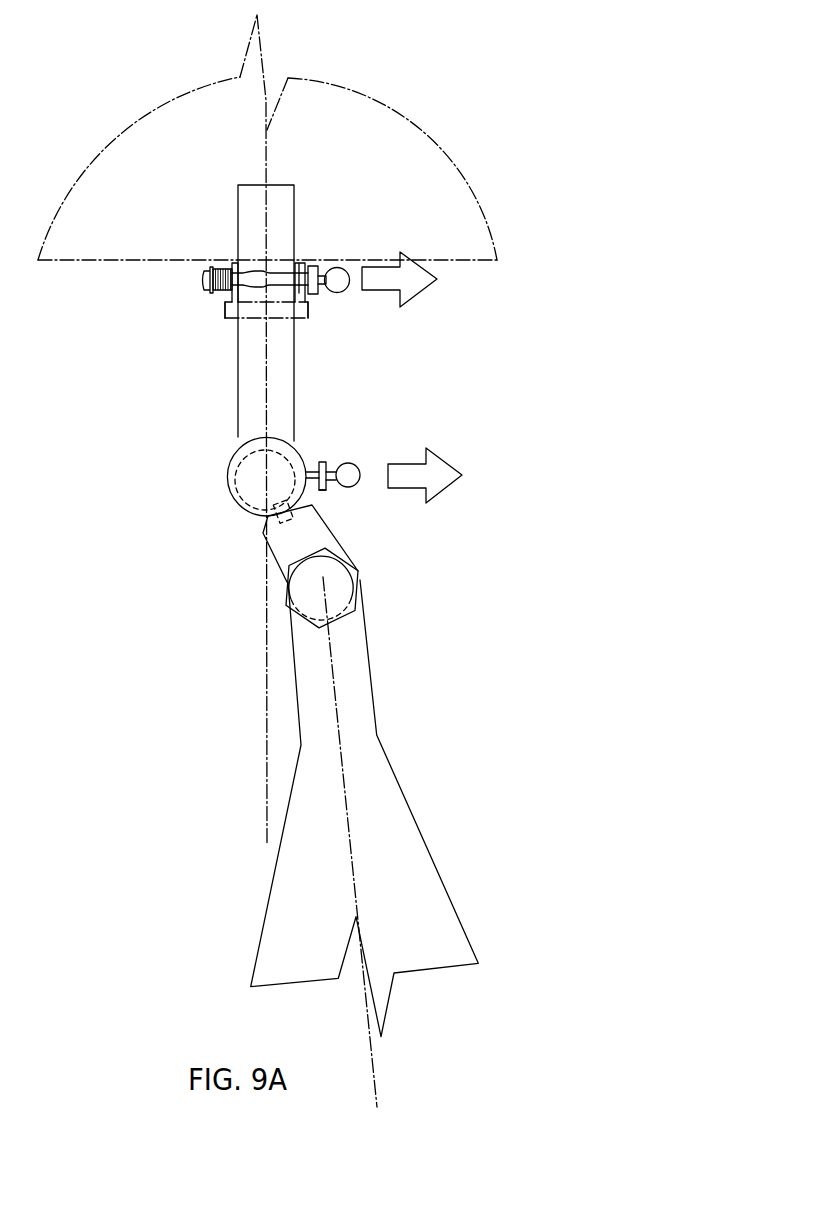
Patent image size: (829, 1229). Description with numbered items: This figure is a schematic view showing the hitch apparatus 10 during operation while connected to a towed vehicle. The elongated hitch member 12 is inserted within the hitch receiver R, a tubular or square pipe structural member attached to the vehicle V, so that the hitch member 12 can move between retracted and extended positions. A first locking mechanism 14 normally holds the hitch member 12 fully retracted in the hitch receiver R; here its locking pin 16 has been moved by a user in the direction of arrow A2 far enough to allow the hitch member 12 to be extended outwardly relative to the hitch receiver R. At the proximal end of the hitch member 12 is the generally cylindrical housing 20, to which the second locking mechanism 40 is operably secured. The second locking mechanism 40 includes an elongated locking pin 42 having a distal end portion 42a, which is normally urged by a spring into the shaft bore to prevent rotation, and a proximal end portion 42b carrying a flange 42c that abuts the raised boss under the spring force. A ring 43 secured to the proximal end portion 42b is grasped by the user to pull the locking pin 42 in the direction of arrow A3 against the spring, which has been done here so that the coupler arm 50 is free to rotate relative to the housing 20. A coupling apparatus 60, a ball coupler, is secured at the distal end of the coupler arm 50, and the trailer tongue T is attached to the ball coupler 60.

The hitch apparatus 10 is at (146, 380).
The hitch member 12 is at (238, 372).
The first locking mechanism 14 is at (291, 243).
The locking pin 16 is at (305, 266).
The hitch receiver R is at (309, 313).
The housing 20 is at (227, 477).
The second locking mechanism 40 is at (344, 457).
The locking pin 42 is at (344, 457).
The distal end portion 42a is at (306, 473).
The proximal end portion 42b is at (330, 475).
The flange 42c is at (322, 489).
The ring 43 is at (357, 468).
The coupler arm 50 is at (282, 548).
The coupling apparatus 60 is at (303, 588).
The trailer tongue T is at (363, 692).
The vehicle V is at (405, 132).
The arrow A2 is at (378, 283).
The arrow A3 is at (407, 475).